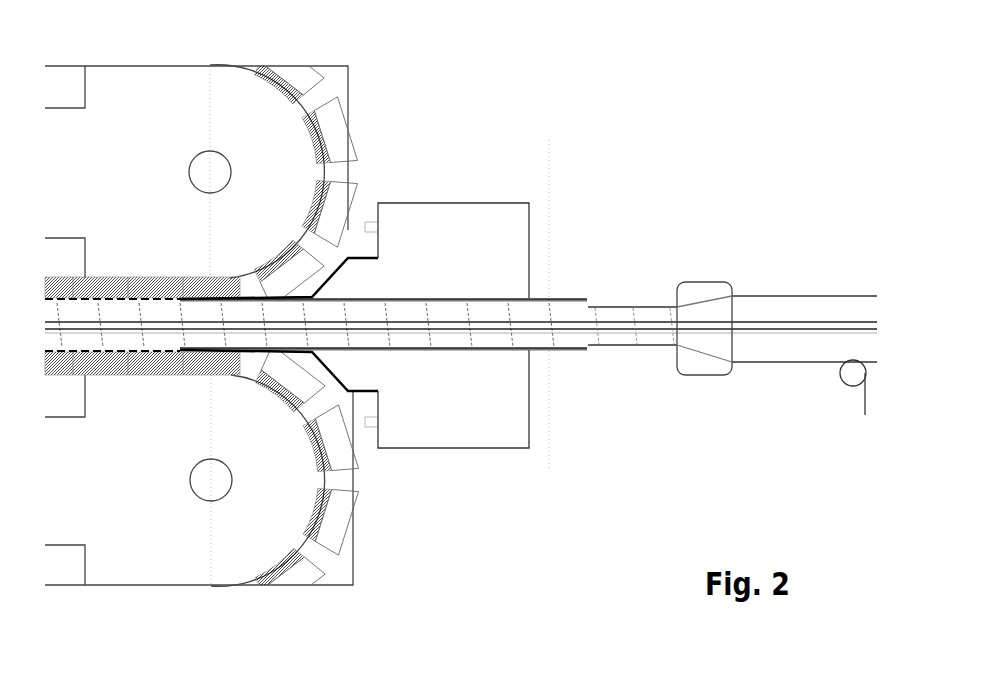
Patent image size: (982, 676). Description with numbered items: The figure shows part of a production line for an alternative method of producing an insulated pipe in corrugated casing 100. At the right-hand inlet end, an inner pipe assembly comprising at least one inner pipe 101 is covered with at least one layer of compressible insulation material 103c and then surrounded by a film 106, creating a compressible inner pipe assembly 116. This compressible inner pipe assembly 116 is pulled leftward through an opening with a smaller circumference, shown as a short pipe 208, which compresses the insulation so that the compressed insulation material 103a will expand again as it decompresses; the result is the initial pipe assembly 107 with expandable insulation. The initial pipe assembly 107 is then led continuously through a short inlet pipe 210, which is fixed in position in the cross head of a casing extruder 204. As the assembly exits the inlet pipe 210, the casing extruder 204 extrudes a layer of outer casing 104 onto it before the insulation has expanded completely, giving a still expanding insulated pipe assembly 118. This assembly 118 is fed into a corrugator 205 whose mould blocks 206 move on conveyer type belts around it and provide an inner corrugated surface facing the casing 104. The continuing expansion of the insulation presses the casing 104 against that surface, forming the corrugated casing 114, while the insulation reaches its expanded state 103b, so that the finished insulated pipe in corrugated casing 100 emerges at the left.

The insulated pipe in corrugated casing 100 is at (68, 306).
The inner pipe 101 is at (603, 318).
The compressed insulation material 103a is at (613, 337).
The expanded insulation material 103b is at (99, 297).
The compressible insulation material 103c is at (747, 310).
The outer casing 104 is at (315, 288).
The film 106 is at (865, 412).
The initial pipe assembly 107 is at (650, 280).
The corrugated casing 114 is at (173, 298).
The compressible inner pipe assembly 116 is at (825, 299).
The still expanding insulated pipe assembly 118 is at (219, 338).
The casing extruder 204 is at (477, 225).
The corrugator 205 is at (163, 127).
The mould blocks 206 is at (327, 135).
The pipe 208 is at (704, 376).
The short inlet pipe 210 is at (558, 350).